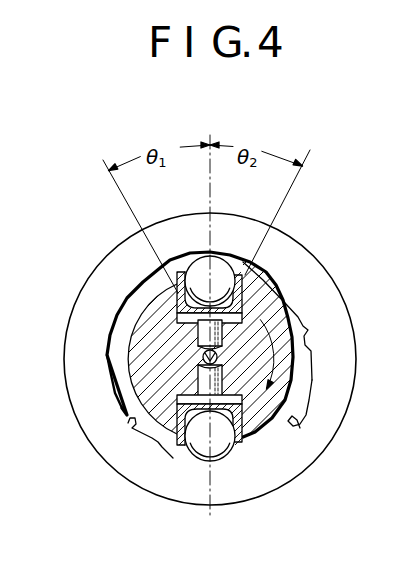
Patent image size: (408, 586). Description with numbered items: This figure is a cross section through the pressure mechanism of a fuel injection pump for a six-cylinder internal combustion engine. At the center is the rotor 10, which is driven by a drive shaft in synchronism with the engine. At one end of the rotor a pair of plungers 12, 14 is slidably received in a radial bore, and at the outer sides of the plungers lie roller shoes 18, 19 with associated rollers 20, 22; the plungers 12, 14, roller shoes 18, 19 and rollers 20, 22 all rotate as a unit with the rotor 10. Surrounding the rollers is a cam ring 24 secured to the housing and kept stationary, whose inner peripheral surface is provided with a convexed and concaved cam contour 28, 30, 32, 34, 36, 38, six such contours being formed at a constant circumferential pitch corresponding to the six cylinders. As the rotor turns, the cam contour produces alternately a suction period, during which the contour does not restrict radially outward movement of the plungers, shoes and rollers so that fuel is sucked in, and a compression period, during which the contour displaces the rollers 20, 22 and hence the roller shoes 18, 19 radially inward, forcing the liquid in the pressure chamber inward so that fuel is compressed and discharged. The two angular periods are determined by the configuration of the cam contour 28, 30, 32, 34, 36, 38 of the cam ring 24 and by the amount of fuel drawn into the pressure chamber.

The rotor 10 is at (131, 338).
The plunger 12 is at (222, 342).
The plunger 14 is at (222, 372).
The roller shoe 18 is at (161, 271).
The roller shoe 19 is at (246, 444).
The roller 20 is at (200, 253).
The roller 22 is at (173, 458).
The cam ring 24 is at (77, 361).
The cam contour 28 is at (242, 262).
The cam contour 30 is at (307, 329).
The cam contour 32 is at (300, 428).
The cam contour 34 is at (243, 445).
The cam contour 36 is at (128, 423).
The cam contour 38 is at (123, 303).